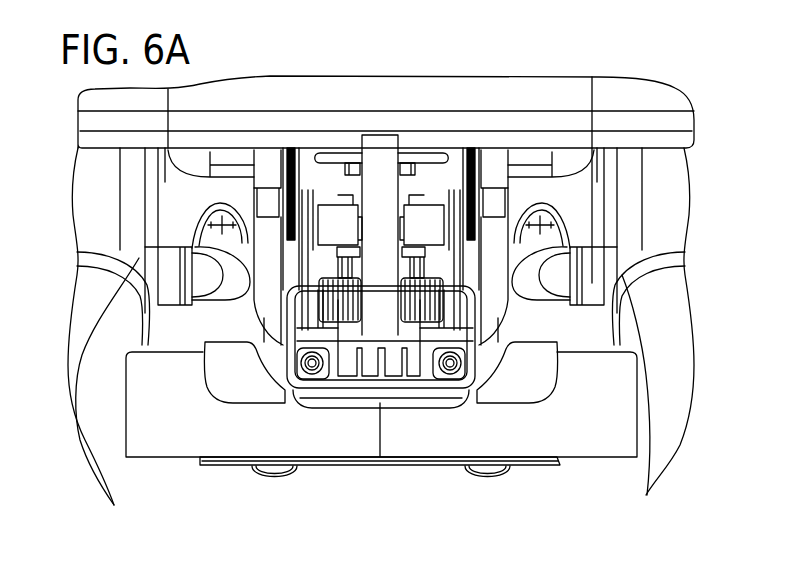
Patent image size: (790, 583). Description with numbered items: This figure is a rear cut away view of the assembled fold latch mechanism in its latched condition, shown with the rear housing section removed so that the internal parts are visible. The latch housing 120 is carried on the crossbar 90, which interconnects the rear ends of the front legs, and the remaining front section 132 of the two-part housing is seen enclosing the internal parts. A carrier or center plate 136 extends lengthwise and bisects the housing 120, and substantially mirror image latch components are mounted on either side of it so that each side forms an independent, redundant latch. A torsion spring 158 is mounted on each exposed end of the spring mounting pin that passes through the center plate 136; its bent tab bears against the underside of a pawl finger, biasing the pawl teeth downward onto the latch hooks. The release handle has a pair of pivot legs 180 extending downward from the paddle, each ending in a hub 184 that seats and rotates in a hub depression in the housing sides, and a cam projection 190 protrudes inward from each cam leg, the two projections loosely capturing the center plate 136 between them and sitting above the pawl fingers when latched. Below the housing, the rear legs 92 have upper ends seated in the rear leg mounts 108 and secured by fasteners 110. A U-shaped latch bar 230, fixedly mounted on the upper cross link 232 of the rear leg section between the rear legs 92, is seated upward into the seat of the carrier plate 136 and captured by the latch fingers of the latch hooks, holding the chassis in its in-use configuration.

The crossbar 90 is at (537, 95).
The rear legs 92 is at (100, 460).
The rear leg mounts 108 is at (100, 210).
The fasteners 110 is at (173, 293).
The latch housing 120 is at (396, 417).
The front section 132 is at (345, 402).
The center plate 136 is at (382, 152).
The torsion spring 158 is at (340, 332).
The pivot legs 180 is at (267, 167).
The hub 184 is at (510, 250).
The cam projection 190 is at (334, 222).
The latch bar 230 is at (492, 323).
The upper cross link 232 is at (590, 432).